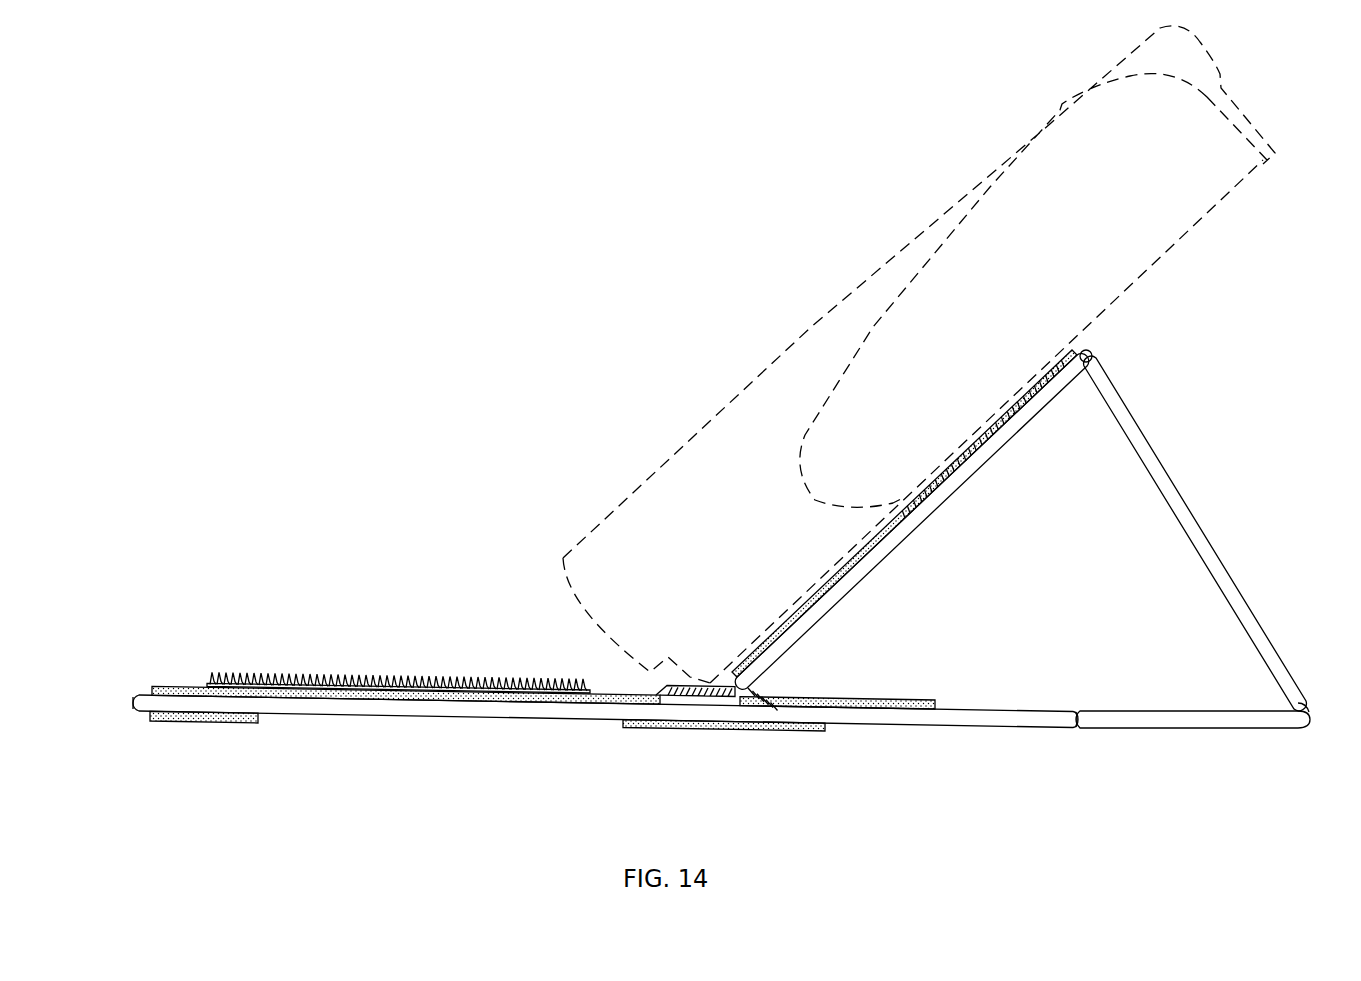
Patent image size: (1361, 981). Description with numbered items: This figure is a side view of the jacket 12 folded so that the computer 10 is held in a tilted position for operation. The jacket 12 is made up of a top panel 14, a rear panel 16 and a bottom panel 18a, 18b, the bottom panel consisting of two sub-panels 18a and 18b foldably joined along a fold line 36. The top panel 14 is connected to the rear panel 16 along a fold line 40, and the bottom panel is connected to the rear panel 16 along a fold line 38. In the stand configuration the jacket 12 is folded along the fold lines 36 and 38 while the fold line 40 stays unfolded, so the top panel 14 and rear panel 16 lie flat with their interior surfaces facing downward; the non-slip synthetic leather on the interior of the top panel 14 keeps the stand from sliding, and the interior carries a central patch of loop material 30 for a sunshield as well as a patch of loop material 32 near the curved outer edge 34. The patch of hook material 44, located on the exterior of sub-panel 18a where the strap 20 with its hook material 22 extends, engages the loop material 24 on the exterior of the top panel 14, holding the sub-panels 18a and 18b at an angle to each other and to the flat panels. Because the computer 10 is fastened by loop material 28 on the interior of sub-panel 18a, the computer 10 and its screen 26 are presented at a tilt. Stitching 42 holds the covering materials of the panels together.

The computer 10 is at (975, 218).
The jacket 12 is at (972, 776).
The top panel 14 is at (398, 718).
The rear panel 16 is at (1185, 722).
The sub-panel 18a is at (955, 480).
The sub-panel 18b is at (1187, 503).
The strap 20 is at (222, 680).
The hook material 22 is at (375, 684).
The loop material 24 is at (905, 698).
The screen 26 is at (850, 292).
The loop material 28 is at (822, 592).
The patch of loop material 30 is at (740, 732).
The patch of loop material 32 is at (215, 725).
The outer edge 34 is at (133, 701).
The fold line 36 is at (1093, 353).
The fold line 38 is at (1306, 720).
The fold line 40 is at (1076, 732).
The stitching 42 is at (1009, 403).
The patch of hook material 44 is at (775, 683).